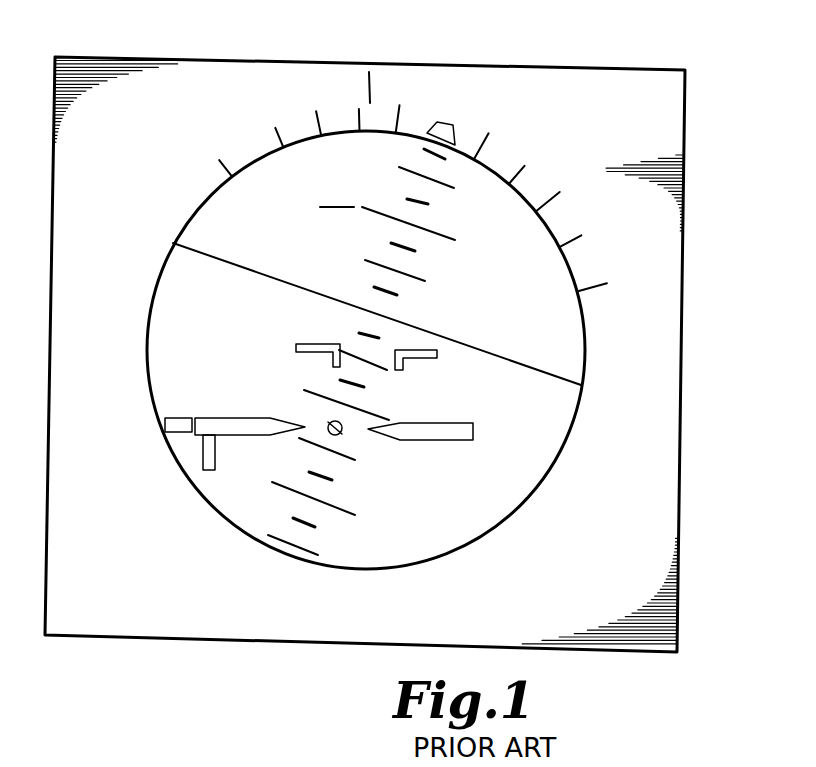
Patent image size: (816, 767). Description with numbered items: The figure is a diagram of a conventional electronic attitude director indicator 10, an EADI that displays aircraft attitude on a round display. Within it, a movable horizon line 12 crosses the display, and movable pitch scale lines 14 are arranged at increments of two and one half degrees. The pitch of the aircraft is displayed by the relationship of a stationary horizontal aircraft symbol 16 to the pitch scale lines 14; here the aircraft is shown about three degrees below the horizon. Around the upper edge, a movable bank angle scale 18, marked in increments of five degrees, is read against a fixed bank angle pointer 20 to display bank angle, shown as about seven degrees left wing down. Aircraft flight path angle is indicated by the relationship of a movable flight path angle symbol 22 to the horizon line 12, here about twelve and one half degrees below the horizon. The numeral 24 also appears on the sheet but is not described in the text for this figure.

The electronic attitude director indicator 10 is at (656, 66).
The horizon line 12 is at (200, 252).
The pitch scale lines 14 is at (425, 253).
The aircraft symbol 16 is at (437, 352).
The bank angle scale 18 is at (400, 105).
The bank angle pointer 20 is at (369, 88).
The flight path angle symbol 22 is at (222, 418).
The display element 24 is at (203, 766).